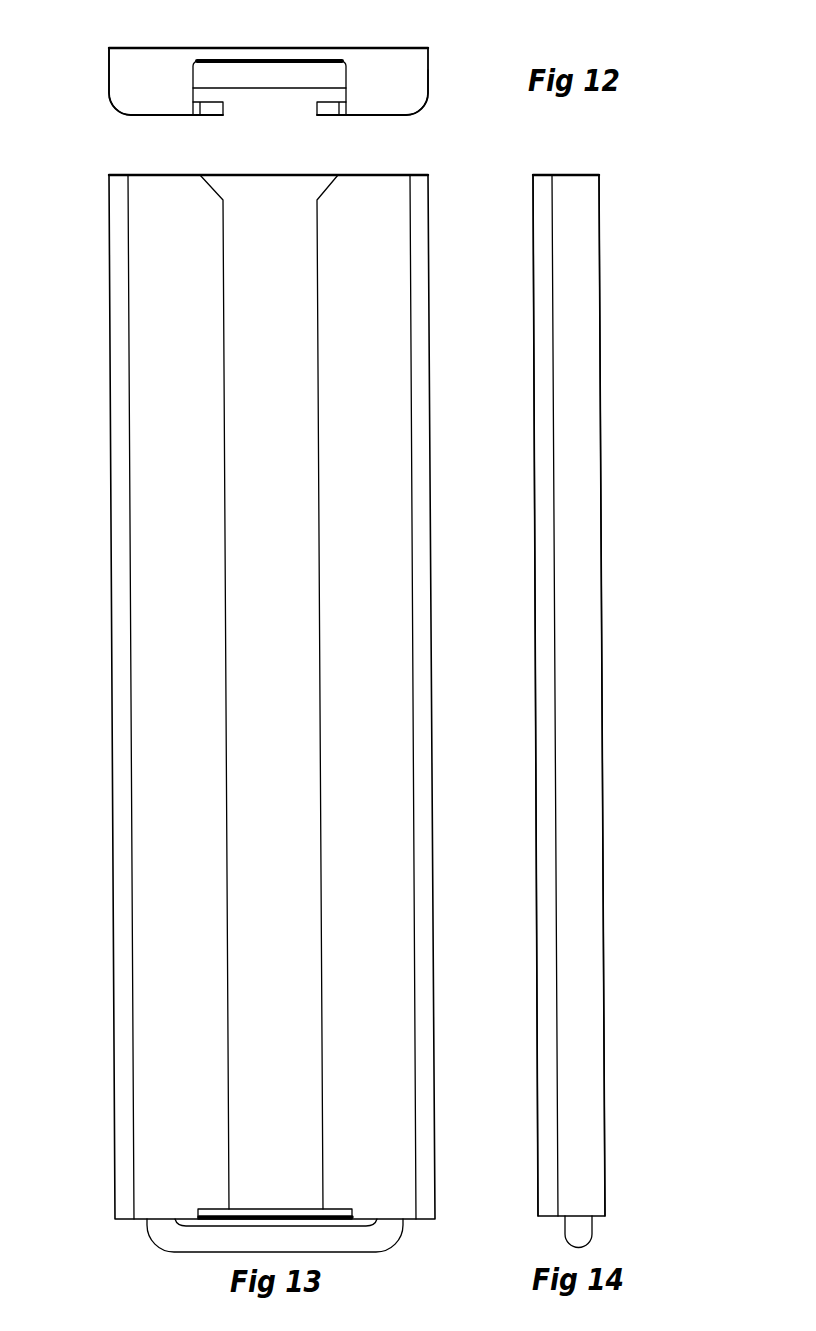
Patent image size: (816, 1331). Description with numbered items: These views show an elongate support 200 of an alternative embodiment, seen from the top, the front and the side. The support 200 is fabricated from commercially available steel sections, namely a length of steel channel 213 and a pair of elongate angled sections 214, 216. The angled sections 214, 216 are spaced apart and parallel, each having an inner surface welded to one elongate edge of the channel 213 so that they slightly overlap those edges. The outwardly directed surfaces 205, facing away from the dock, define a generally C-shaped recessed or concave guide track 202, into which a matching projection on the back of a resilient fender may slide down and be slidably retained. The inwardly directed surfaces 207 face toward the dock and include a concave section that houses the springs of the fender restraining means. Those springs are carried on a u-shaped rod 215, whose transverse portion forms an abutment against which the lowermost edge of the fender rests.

In FIG. 12, the elongate support 200 is at (436, 93).
In FIG. 13, the elongate support 200 is at (441, 207).
In FIG. 14, the elongate support 200 is at (572, 171).
In FIG. 12, the guide track 202 is at (267, 90).
In FIG. 13, the guide track 202 is at (300, 187).
In FIG. 12, the outwardly directed surfaces 205 is at (367, 120).
In FIG. 13, the outwardly directed surfaces 205 is at (242, 493).
In FIG. 14, the outwardly directed surfaces 205 is at (533, 309).
In FIG. 12, the inwardly directed surfaces 207 is at (403, 45).
In FIG. 14, the inwardly directed surfaces 207 is at (600, 298).
In FIG. 12, the steel channel 213 is at (257, 54).
In FIG. 13, the steel channel 213 is at (268, 222).
In FIG. 12, the elongate angled section 214 is at (118, 68).
In FIG. 13, the elongate angled section 214 is at (116, 409).
In FIG. 13, the u-shaped rod 215 is at (373, 1230).
In FIG. 14, the u-shaped rod 215 is at (580, 1228).
In FIG. 13, the elongate angled section 216 is at (397, 397).
In FIG. 14, the elongate angled section 216 is at (573, 397).